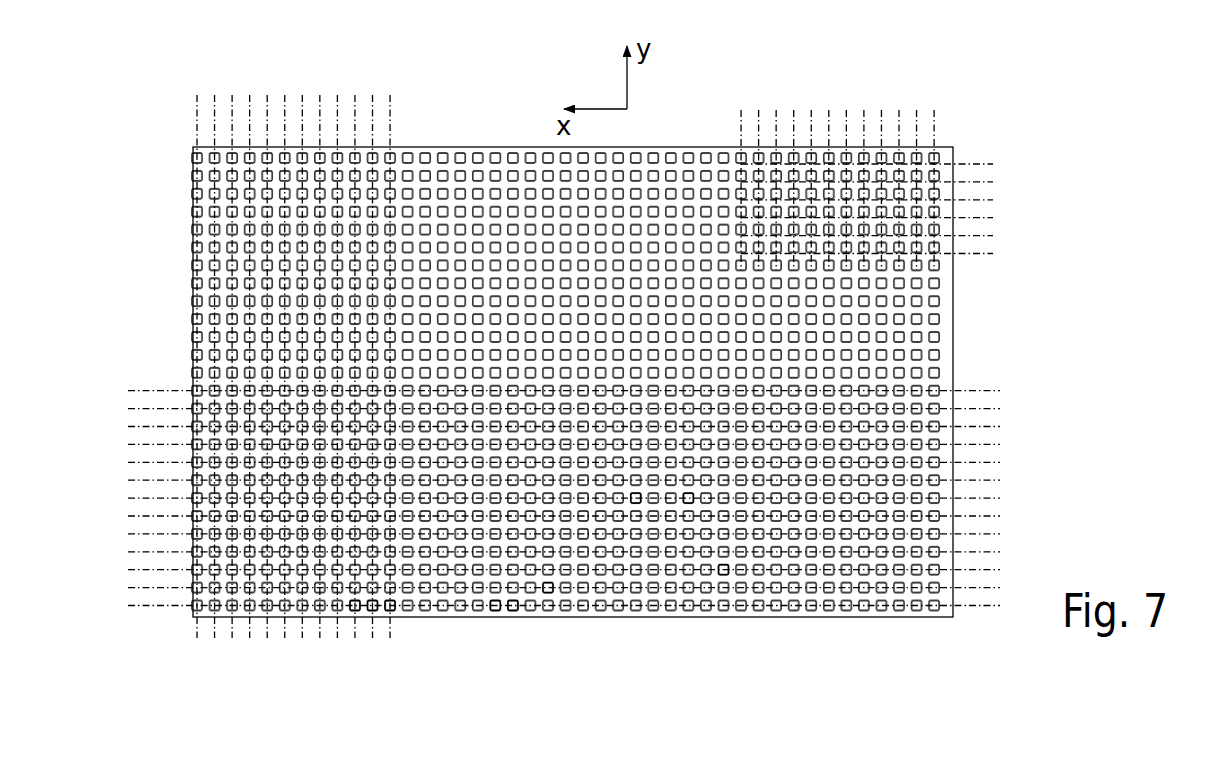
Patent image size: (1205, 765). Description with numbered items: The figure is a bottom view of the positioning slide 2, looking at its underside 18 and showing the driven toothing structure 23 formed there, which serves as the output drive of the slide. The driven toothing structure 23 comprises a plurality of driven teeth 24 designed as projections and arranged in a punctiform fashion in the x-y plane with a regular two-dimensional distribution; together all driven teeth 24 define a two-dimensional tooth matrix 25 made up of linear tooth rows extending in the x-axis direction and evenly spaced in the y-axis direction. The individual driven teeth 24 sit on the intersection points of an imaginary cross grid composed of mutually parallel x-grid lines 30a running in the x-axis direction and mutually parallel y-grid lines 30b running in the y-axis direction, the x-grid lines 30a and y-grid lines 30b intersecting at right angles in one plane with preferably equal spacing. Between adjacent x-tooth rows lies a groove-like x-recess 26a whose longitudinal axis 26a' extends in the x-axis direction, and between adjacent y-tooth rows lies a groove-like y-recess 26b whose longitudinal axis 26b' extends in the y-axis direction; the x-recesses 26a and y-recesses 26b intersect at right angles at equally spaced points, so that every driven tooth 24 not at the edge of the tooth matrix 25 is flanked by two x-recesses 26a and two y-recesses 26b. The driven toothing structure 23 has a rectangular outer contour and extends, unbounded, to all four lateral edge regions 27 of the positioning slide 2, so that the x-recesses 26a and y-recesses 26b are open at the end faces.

The positioning slide 2 is at (495, 150).
The underside 18 is at (758, 629).
The driven toothing structure 23 is at (724, 580).
The driven teeth 24 is at (392, 611).
The tooth matrix 25 is at (559, 594).
The x-recess 26a is at (906, 253).
The longitudinal axis of x-recess 26a' is at (1047, 182).
The y-recess 26b is at (801, 164).
The longitudinal axis of y-recess 26b' is at (811, 62).
The lateral edge regions 27 is at (433, 145).
The x-grid lines 30a is at (148, 447).
The y-grid lines 30b is at (338, 93).